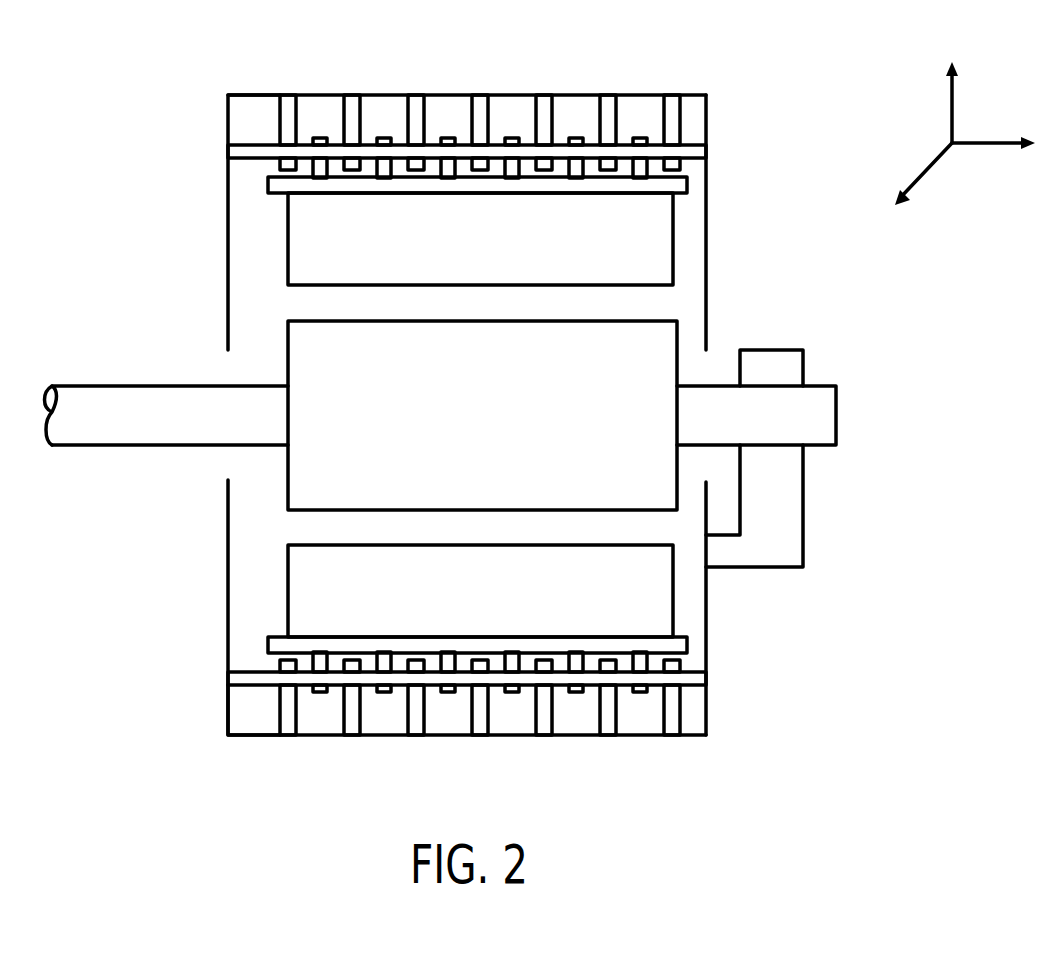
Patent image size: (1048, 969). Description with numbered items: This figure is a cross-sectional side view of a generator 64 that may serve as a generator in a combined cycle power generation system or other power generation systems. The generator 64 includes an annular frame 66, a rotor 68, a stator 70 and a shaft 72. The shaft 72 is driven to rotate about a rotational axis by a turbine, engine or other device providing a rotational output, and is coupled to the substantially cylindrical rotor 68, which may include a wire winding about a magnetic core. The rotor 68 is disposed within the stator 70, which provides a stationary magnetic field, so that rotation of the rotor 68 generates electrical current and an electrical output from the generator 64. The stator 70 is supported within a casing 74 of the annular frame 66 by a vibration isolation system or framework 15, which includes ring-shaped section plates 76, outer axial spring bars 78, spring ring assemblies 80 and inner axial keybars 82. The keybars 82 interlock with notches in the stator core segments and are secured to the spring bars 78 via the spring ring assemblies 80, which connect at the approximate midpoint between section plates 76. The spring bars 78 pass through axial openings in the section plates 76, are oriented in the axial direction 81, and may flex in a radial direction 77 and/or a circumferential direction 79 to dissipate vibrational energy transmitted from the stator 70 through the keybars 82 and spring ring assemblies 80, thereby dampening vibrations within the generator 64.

The framework 15 is at (272, 114).
The generator 64 is at (760, 119).
The annular frame 66 is at (717, 64).
The rotor 68 is at (288, 342).
The stator 70 is at (288, 240).
The shaft 72 is at (108, 386).
The casing 74 is at (323, 95).
The section plates 76 is at (361, 120).
The radial direction 77 is at (955, 107).
The spring bars 78 is at (247, 145).
The radial direction 79 is at (930, 165).
The spring ring assemblies 80 is at (574, 138).
The axial direction 81 is at (985, 145).
The keybars 82 is at (687, 181).